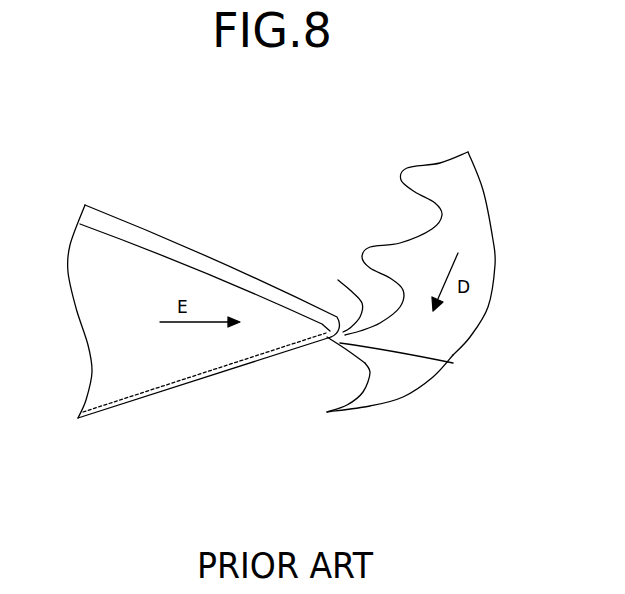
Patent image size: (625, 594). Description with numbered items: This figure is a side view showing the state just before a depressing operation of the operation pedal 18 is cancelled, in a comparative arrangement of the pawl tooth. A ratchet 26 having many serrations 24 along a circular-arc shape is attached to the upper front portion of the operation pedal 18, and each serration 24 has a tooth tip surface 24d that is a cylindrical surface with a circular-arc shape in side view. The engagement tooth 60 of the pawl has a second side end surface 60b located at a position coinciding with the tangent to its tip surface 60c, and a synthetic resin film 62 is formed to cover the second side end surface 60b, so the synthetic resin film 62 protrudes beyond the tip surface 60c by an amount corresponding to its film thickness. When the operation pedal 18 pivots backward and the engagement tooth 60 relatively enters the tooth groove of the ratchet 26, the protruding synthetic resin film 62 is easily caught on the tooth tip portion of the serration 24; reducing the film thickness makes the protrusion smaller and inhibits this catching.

The operation pedal 18 is at (426, 287).
The serration 24 is at (377, 262).
The tooth tip surface 24d is at (323, 342).
The ratchet 26 is at (397, 377).
The engagement tooth 60 is at (208, 343).
The second side end surface 60b is at (184, 385).
The tip surface 60c is at (330, 293).
The synthetic resin film 62 is at (153, 250).